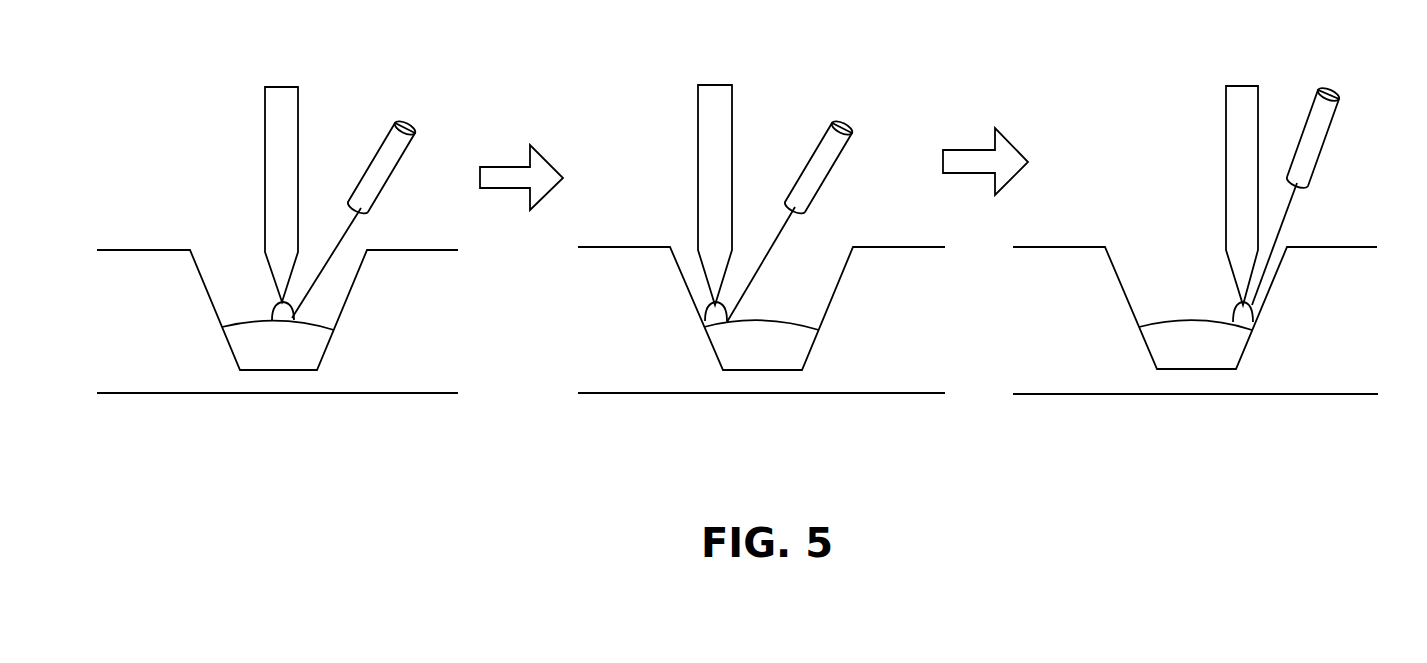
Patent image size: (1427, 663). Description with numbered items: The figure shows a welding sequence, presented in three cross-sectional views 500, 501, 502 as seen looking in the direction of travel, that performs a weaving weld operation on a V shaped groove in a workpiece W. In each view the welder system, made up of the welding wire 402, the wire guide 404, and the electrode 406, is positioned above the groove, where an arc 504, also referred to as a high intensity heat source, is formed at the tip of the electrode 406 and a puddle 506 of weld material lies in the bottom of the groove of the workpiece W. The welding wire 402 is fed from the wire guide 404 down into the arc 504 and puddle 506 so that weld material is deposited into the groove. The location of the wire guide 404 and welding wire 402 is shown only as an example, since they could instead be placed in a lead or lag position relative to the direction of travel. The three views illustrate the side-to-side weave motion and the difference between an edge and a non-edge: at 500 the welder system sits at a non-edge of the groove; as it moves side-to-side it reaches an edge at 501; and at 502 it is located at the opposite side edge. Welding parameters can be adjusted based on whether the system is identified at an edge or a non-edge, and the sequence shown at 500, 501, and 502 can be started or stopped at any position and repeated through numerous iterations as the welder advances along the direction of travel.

The welding wire 402 is at (356, 216).
The wire guide 404 is at (413, 125).
The electrode 406 is at (298, 118).
The arc 504 is at (274, 303).
The puddle 506 is at (737, 339).
The workpiece W is at (737, 320).
The welding sequence at a non-edge 500 is at (280, 445).
The welding sequence at an edge 501 is at (705, 453).
The welding sequence at an opposite side edge 502 is at (1102, 445).